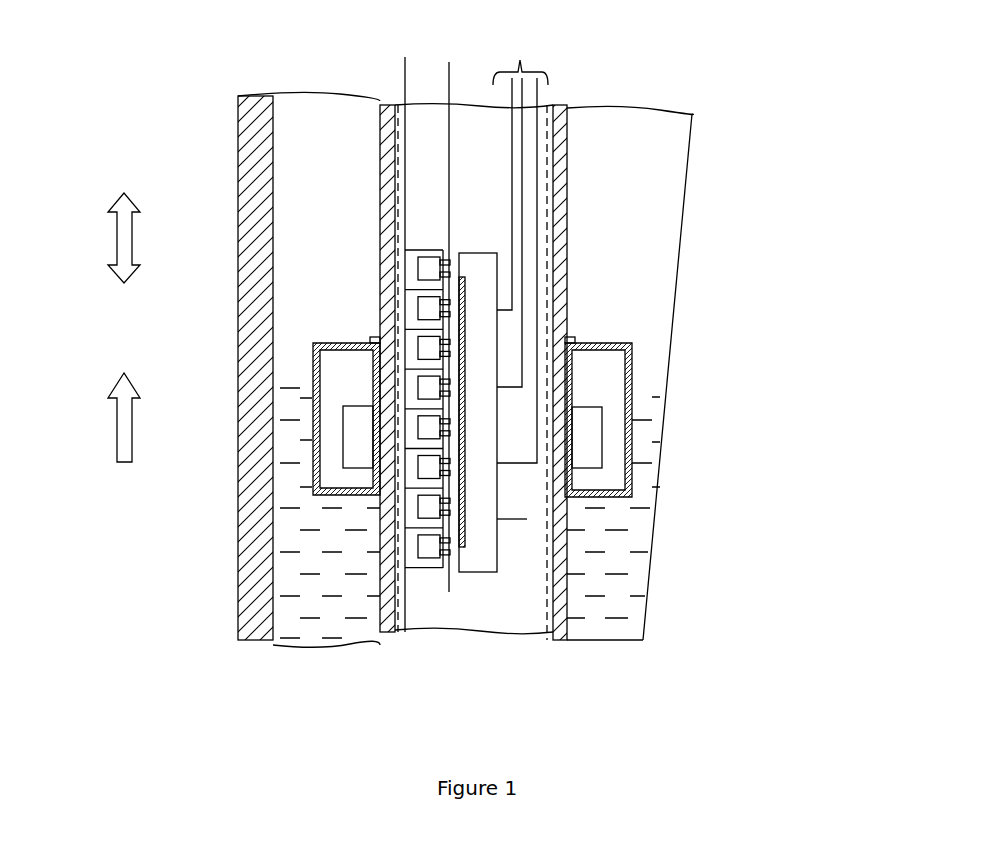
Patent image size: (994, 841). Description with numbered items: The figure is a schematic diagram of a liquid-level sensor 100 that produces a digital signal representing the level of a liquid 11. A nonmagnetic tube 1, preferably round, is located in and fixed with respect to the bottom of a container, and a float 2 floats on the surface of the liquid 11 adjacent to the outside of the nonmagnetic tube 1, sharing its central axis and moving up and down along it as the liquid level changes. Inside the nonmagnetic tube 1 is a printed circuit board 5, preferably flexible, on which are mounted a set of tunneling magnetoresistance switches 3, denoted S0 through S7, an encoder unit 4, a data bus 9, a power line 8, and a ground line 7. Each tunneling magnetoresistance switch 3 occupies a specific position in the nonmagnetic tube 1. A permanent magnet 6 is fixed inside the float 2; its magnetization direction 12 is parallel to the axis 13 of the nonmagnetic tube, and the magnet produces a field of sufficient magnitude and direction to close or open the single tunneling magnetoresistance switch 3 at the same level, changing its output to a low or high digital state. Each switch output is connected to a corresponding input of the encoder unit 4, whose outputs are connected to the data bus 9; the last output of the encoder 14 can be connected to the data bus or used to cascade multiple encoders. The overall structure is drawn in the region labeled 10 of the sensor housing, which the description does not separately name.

The liquid-level sensor 100 is at (760, 65).
The nonmagnetic tube 1 is at (567, 176).
The float 2 is at (338, 379).
The tunneling magnetoresistance switches 3 is at (466, 395).
The encoder unit 4 is at (483, 299).
The printed circuit board 5 is at (483, 602).
The permanent magnet 6 is at (352, 434).
The ground line 7 is at (400, 78).
The power line 8 is at (449, 63).
The data bus 9 is at (548, 78).
The outer wall 10 is at (240, 330).
The liquid 11 is at (610, 535).
The magnetization direction 12 is at (110, 411).
The axis of the nonmagnetic tube 13 is at (110, 243).
The last output of the encoder 14 is at (513, 525).